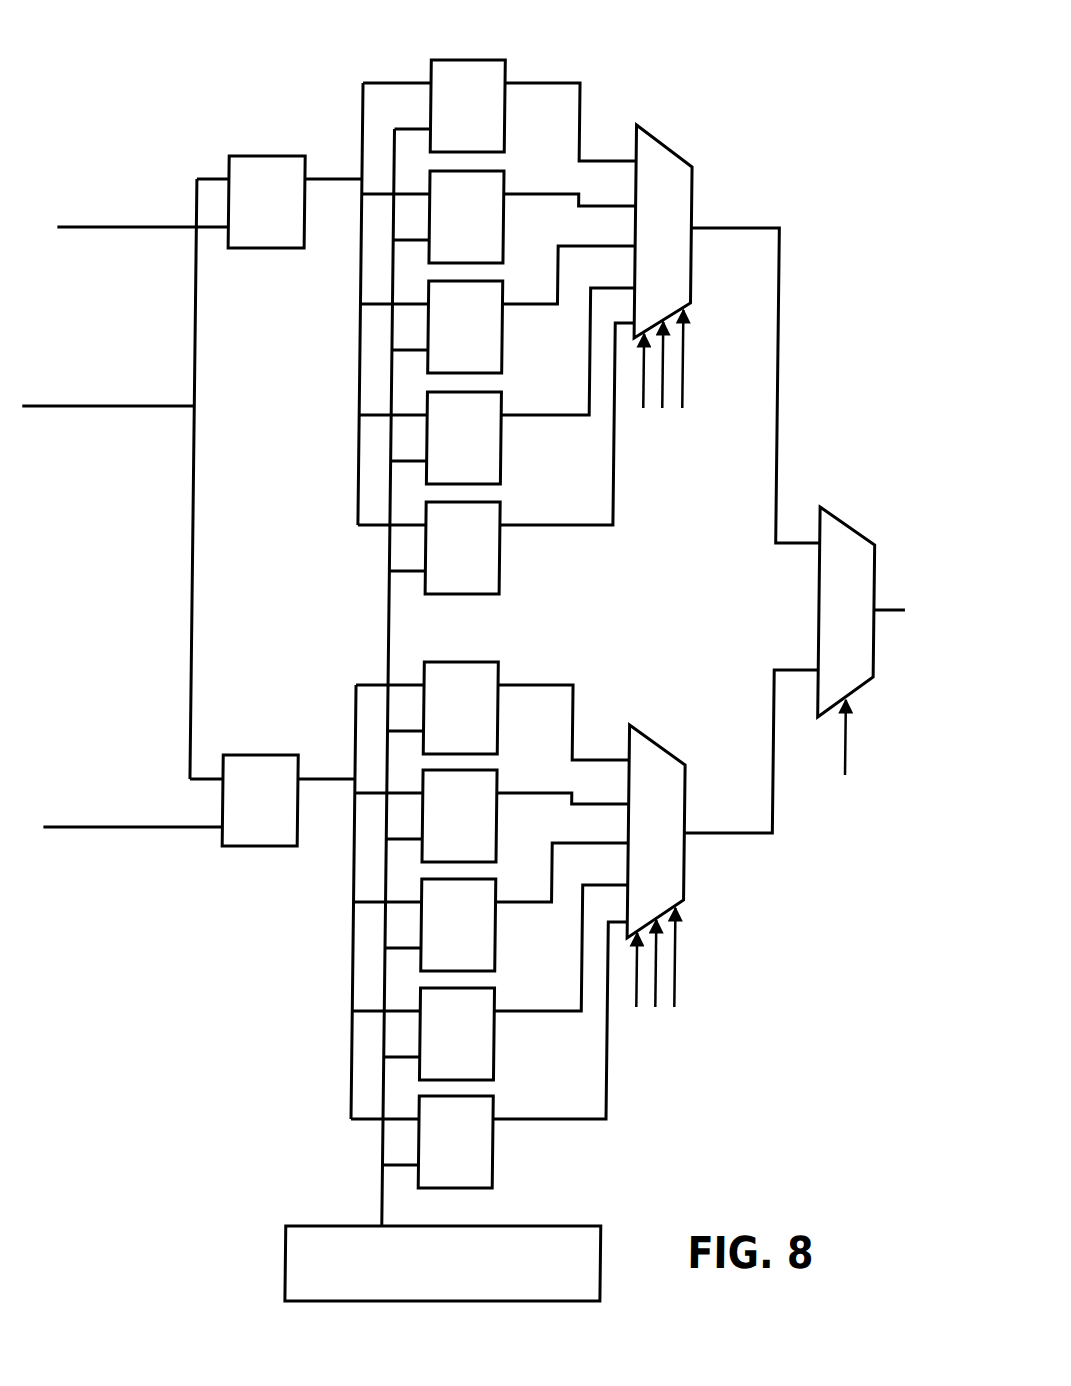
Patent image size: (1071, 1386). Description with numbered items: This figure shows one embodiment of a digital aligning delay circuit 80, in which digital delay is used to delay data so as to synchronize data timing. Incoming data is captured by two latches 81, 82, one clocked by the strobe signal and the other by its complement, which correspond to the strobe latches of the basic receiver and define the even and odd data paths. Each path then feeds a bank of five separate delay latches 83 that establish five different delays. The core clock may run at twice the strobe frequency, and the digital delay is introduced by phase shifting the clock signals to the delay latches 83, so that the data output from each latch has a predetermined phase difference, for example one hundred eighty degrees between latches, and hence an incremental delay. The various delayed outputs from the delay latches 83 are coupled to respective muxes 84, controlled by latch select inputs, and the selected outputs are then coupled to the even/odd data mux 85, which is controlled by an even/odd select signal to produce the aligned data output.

The digital aligning delay circuit 80 is at (700, 52).
The latch 81 is at (265, 156).
The latch 82 is at (262, 755).
The delay latches 83 is at (487, 60).
The muxes 84 is at (675, 153).
The even/odd data mux 85 is at (840, 517).